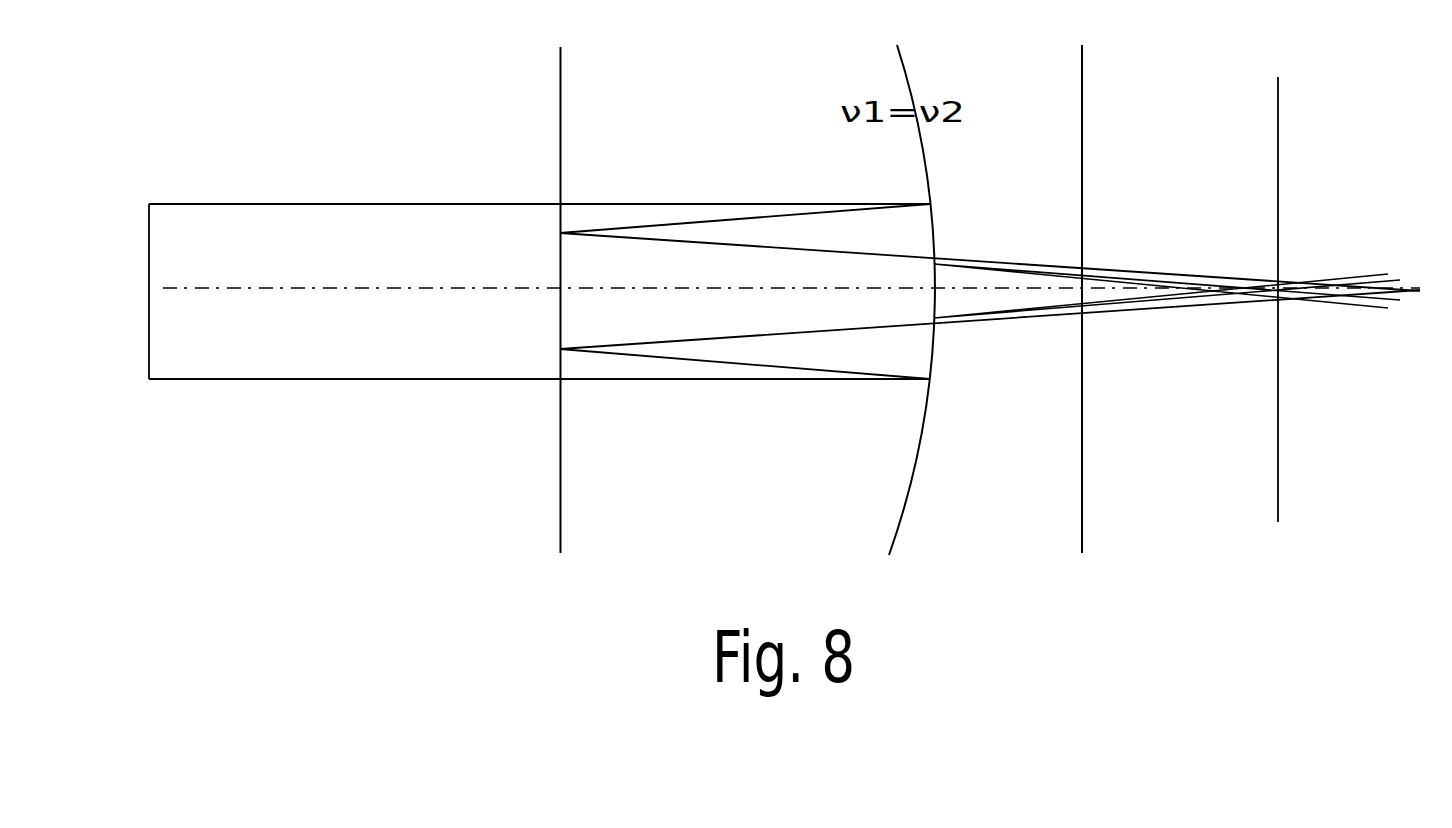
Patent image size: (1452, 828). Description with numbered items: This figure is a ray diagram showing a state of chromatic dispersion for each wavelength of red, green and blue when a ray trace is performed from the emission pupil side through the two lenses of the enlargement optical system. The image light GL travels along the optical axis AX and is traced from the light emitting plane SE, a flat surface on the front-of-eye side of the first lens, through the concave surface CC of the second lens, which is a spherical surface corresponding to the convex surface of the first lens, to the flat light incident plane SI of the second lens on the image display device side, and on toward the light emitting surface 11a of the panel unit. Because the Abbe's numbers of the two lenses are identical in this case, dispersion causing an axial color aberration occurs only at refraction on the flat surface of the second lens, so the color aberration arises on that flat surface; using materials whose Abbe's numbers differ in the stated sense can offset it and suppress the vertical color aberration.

The optical axis AX is at (348, 290).
The light emitting plane SE is at (560, 407).
The concave surface CC is at (912, 463).
The image light GL is at (989, 315).
The light incident plane SI is at (1082, 398).
The light emitting surface 11a is at (1278, 366).